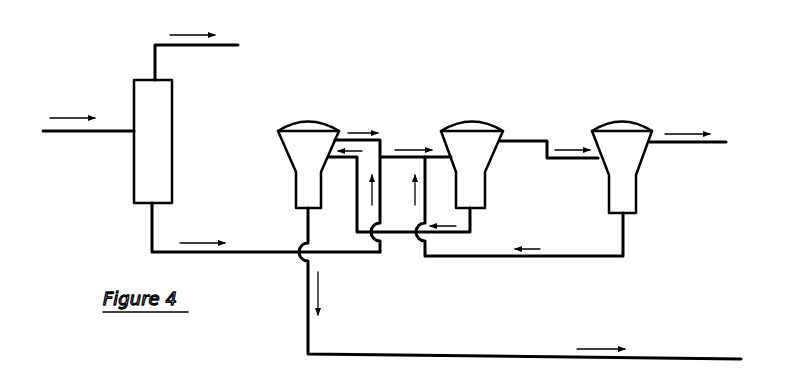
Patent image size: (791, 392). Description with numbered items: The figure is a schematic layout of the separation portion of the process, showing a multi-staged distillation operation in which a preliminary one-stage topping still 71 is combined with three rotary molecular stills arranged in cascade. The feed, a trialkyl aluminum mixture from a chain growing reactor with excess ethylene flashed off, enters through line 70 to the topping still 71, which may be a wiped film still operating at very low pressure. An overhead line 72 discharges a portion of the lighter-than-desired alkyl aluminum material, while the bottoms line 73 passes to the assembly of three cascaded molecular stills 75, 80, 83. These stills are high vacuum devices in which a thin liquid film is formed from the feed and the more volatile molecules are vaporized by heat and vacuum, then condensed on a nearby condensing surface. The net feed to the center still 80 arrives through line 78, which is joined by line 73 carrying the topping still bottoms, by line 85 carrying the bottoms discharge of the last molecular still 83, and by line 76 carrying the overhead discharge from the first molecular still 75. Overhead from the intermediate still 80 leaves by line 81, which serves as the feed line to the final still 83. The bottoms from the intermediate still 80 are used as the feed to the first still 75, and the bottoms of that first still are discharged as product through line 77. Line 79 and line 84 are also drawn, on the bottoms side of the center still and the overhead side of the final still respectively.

The feed line 70 is at (80, 133).
The topping still 71 is at (163, 141).
The overhead line 72 is at (212, 47).
The bottoms line 73 is at (153, 220).
The first molecular still 75 is at (318, 157).
The overhead discharge line from first molecular still 76 is at (383, 138).
The product line 77 is at (309, 336).
The net feed line to center still 78 is at (437, 151).
The recycle line from second hopper 79 is at (474, 229).
The intermediate molecular still 80 is at (482, 160).
The overhead line from intermediate still 81 is at (523, 140).
The final molecular still 83 is at (634, 164).
The product outlet line 84 is at (690, 145).
The bottoms discharge line from last molecular still 85 is at (624, 240).